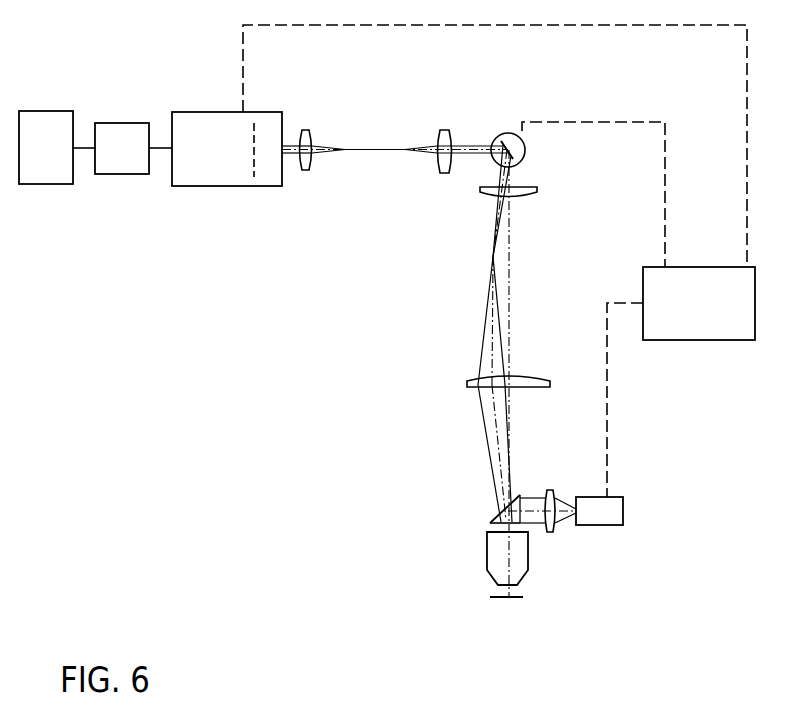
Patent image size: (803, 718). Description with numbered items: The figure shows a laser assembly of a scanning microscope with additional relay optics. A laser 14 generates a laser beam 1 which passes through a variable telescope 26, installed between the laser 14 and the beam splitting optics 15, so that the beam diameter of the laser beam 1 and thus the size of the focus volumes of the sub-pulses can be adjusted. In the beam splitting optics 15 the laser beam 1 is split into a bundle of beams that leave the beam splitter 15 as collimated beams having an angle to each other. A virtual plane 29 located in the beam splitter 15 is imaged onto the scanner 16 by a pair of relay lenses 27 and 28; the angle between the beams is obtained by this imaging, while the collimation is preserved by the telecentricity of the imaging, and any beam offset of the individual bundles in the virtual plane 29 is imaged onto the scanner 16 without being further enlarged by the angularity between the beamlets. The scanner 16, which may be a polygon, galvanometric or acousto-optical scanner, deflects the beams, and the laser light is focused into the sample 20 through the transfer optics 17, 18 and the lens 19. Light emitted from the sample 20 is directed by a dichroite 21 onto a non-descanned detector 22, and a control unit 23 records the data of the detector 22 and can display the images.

The laser 14 is at (46, 130).
The laser beam 1 is at (84, 133).
The variable telescope 26 is at (133, 135).
The beam splitting optics 15 is at (227, 133).
The virtual plane 29 is at (249, 168).
The relay lens 27 is at (313, 164).
The relay lens 28 is at (430, 164).
The scanner 16 is at (522, 150).
The transfer optics 17 is at (493, 198).
The transfer optics 18 is at (492, 388).
The dichroite 21 is at (486, 508).
The lens 19 is at (523, 558).
The sample 20 is at (506, 612).
The non-descanned detector 22 is at (599, 511).
The control unit 23 is at (699, 321).